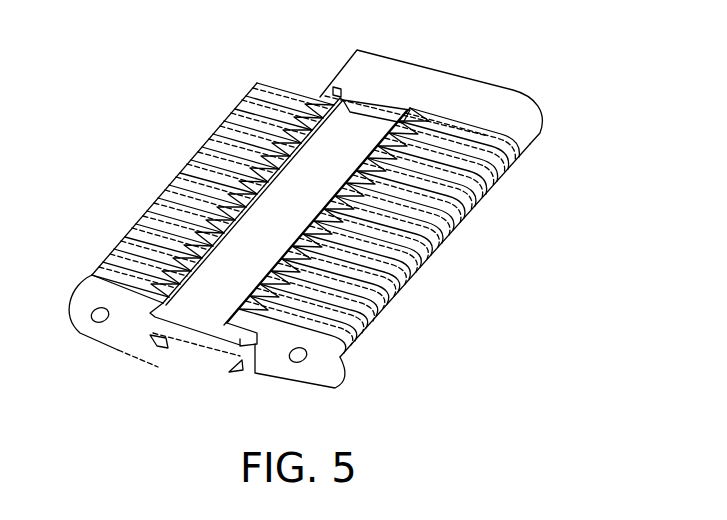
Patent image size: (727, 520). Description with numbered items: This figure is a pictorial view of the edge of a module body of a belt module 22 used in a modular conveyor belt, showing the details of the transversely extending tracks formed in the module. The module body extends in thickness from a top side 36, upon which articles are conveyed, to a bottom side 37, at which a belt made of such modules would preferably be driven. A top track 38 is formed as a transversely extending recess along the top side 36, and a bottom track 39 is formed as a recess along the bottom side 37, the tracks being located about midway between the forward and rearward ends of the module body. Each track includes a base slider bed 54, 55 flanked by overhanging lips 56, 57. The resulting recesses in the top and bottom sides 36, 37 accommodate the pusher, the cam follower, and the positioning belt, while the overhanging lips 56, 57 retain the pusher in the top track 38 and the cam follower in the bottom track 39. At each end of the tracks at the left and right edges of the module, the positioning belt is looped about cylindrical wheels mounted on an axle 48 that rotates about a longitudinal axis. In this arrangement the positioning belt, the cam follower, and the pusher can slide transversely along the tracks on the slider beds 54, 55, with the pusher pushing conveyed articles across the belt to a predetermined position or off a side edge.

The belt module 22 is at (100, 63).
The top side 36 is at (445, 143).
The bottom side 37 is at (312, 383).
The top track 38 is at (362, 133).
The bottom track 39 is at (171, 366).
The axle 48 is at (333, 97).
The base slider bed 54 is at (205, 327).
The base slider bed 55 is at (207, 353).
The overhanging lip 56 is at (152, 352).
The overhanging lip 57 is at (238, 368).